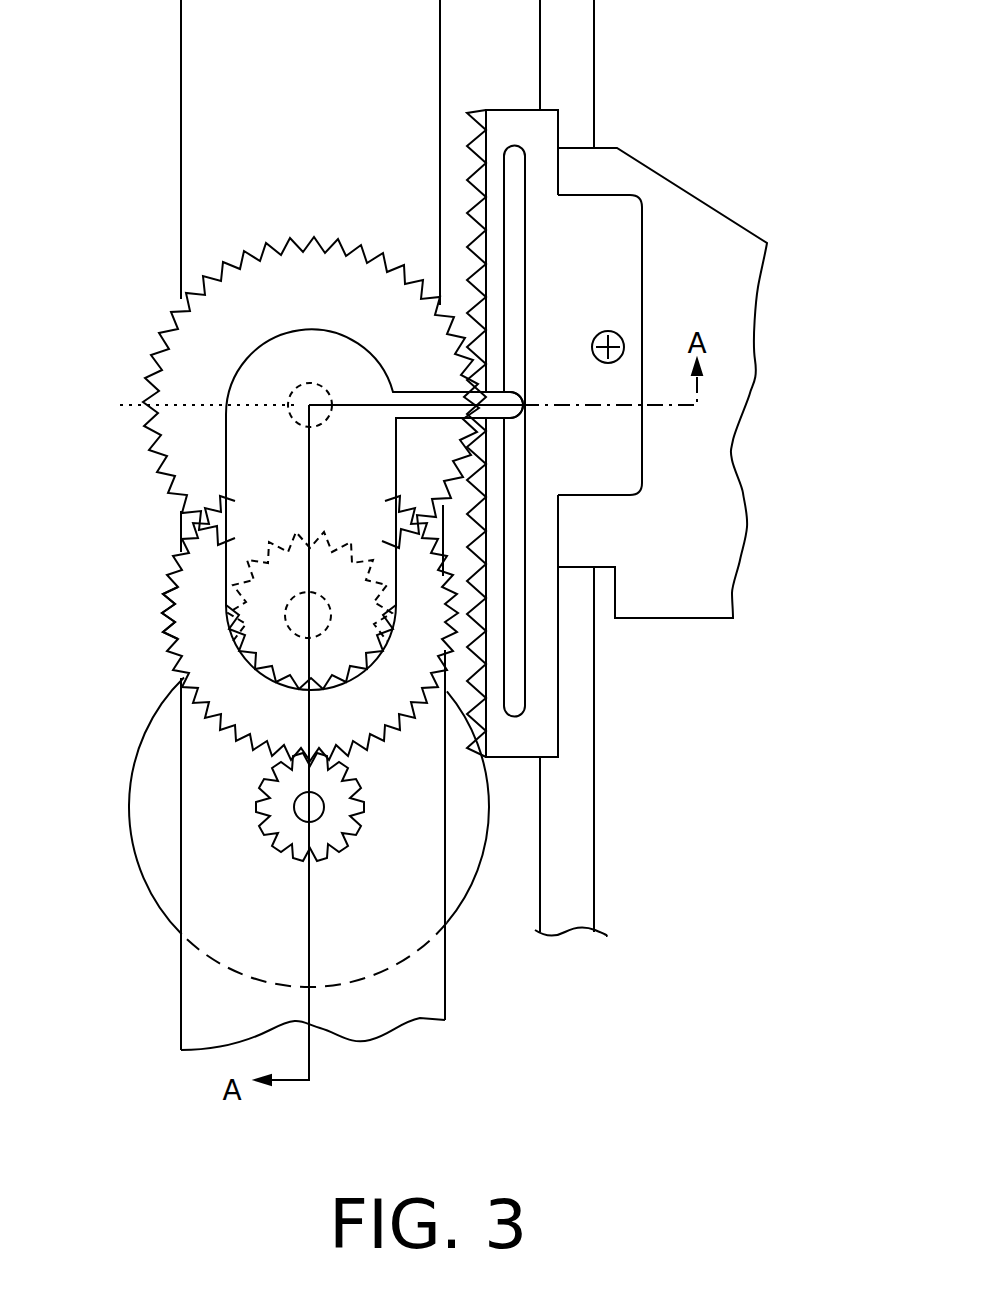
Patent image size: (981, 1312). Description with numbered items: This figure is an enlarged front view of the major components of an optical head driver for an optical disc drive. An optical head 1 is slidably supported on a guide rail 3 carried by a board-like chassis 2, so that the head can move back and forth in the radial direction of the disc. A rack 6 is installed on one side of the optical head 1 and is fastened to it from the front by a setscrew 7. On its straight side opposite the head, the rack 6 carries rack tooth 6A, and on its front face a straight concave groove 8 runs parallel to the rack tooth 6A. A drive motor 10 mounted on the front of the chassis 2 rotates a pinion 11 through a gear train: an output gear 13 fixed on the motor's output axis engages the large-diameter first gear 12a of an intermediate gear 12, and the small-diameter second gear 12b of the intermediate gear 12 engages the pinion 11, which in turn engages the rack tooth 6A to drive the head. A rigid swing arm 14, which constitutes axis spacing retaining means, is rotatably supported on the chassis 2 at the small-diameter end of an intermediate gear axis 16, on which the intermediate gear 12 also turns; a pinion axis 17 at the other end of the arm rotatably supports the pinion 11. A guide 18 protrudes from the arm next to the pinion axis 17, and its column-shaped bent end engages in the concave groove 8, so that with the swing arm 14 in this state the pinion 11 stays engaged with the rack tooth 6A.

The optical head 1 is at (710, 577).
The chassis 2 is at (218, 121).
The guide rail 3 is at (577, 888).
The rack 6 is at (540, 708).
The rack tooth 6A is at (466, 146).
The setscrew 7 is at (624, 333).
The concave groove 8 is at (510, 197).
The drive motor 10 is at (458, 873).
The pinion 11 is at (180, 350).
The intermediate gear 12 is at (186, 680).
The first gear 12a is at (178, 660).
The second gear 12b is at (175, 640).
The output gear 13 is at (257, 813).
The swing arm 14 is at (243, 480).
The intermediate gear axis 16 is at (335, 616).
The pinion axis 17 is at (120, 405).
The guide 18 is at (503, 423).